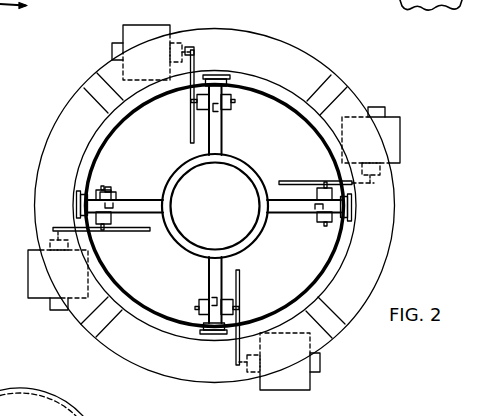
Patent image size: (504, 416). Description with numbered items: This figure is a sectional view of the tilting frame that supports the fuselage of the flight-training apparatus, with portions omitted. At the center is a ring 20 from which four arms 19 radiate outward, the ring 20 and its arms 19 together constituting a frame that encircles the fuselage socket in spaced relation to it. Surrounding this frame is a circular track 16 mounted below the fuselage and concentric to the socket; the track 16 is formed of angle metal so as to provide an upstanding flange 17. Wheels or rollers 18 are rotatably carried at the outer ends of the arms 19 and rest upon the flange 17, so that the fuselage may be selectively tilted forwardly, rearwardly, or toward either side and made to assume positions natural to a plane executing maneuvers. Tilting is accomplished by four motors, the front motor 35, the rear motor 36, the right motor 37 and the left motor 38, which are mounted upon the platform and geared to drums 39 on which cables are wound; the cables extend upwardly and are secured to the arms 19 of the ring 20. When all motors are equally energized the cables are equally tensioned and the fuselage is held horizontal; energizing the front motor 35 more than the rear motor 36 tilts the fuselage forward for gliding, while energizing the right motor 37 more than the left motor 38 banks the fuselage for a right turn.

The circular track 16 is at (342, 252).
The upstanding flange 17 is at (320, 277).
The wheels or rollers 18 is at (218, 76).
The arms 19 is at (217, 128).
The ring 20 is at (248, 165).
The front motor 35 is at (147, 30).
The rear motor 36 is at (310, 382).
The right motor 37 is at (400, 133).
The left motor 38 is at (28, 280).
The drums 39 is at (118, 190).